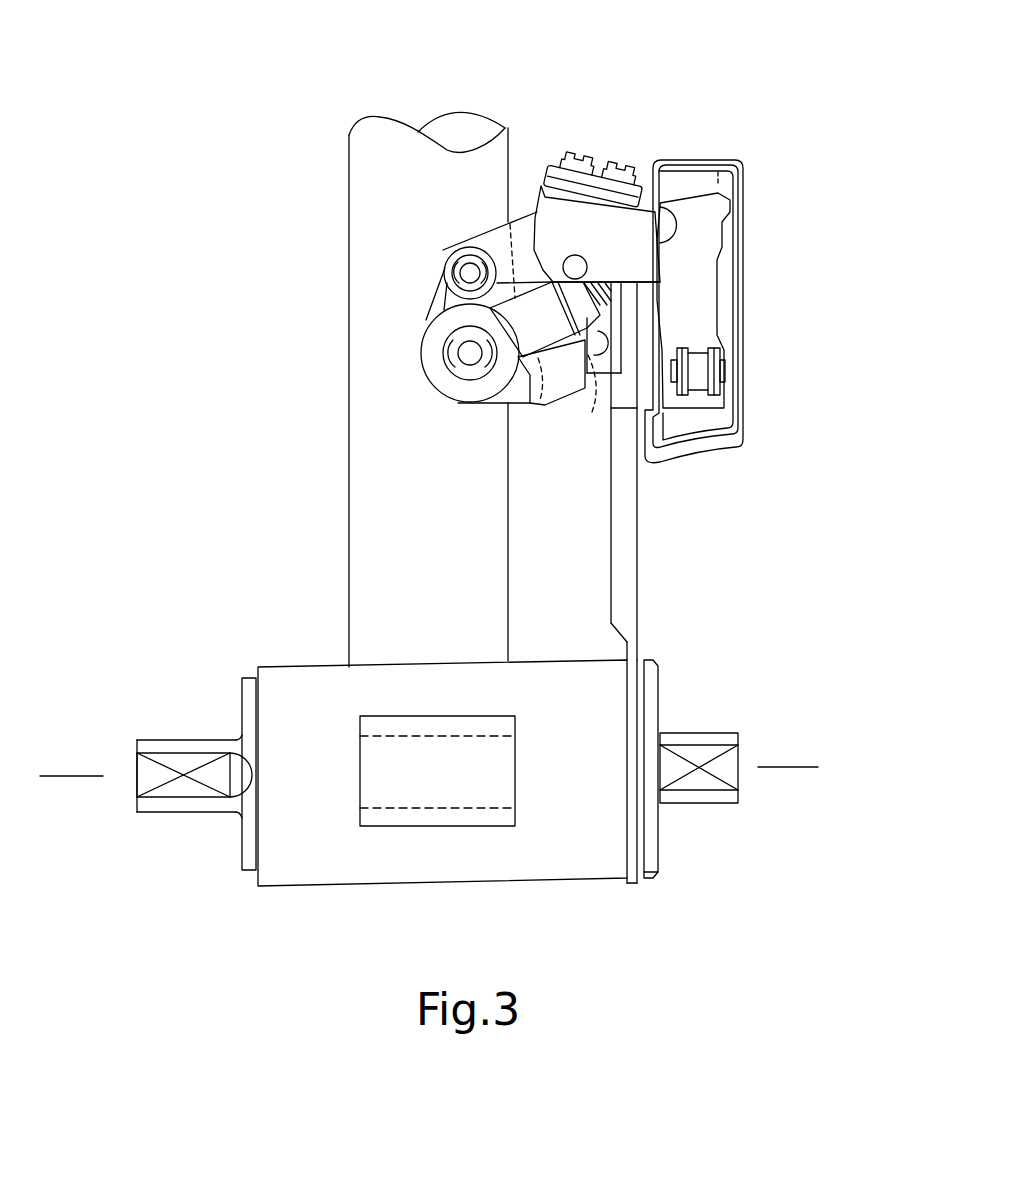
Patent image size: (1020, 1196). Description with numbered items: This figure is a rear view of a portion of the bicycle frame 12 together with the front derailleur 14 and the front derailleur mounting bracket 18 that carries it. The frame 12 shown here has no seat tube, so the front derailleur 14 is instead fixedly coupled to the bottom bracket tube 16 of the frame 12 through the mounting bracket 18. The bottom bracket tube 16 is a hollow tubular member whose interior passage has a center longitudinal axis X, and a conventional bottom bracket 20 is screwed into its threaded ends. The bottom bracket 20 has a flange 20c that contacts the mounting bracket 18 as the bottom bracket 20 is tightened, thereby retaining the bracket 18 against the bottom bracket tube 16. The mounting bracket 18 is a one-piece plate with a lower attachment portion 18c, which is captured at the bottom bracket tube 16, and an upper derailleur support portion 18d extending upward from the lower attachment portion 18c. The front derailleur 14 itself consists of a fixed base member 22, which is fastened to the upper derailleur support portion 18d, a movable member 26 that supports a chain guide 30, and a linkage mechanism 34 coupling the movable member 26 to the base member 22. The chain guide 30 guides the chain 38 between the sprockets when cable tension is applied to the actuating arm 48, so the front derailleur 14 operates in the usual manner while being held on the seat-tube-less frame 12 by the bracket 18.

The frame 12 is at (349, 278).
The front derailleur 14 is at (448, 230).
The bottom bracket tube 16 is at (285, 663).
The front derailleur mounting bracket 18 is at (661, 582).
The lower attachment portion 18c is at (633, 827).
The upper derailleur support portion 18d is at (617, 425).
The bottom bracket 20 is at (733, 783).
The flange 20c is at (647, 880).
The fixed base member 22 is at (607, 380).
The movable member 26 is at (550, 213).
The chain guide 30 is at (668, 162).
The linkage mechanism 34 is at (437, 318).
The chain 38 is at (697, 350).
The actuating arm 48 is at (546, 372).
The center longitudinal axis X is at (780, 767).